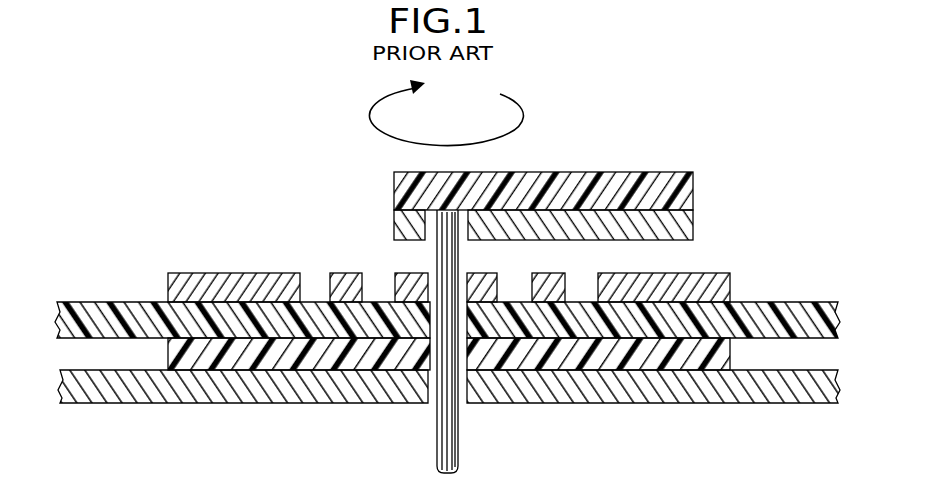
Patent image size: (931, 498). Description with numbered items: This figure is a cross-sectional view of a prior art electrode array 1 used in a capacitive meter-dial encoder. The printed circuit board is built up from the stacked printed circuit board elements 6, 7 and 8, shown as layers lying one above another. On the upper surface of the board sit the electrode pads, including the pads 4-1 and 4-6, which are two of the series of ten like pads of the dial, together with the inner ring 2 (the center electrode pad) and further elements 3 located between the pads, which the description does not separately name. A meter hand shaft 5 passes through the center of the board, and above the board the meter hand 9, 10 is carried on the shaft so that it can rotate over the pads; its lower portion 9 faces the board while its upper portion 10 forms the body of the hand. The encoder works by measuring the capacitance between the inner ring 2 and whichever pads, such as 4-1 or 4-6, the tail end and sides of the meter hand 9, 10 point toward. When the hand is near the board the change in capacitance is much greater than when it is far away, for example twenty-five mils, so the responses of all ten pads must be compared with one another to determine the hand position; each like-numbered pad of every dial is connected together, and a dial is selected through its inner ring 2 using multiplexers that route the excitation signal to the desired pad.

The thermal print head (prior art) 1 is at (736, 122).
The inner ring 2 is at (405, 273).
The terminal electrode 3 is at (345, 273).
The pad 4-1 is at (178, 273).
The pad 4-6 is at (718, 273).
The meter hand shaft 5 is at (459, 447).
The printed circuit board element 6 is at (110, 404).
The printed circuit board element 7 is at (222, 372).
The printed circuit board element 8 is at (800, 302).
The meter hand 9 is at (693, 215).
The meter hand 10 is at (693, 185).